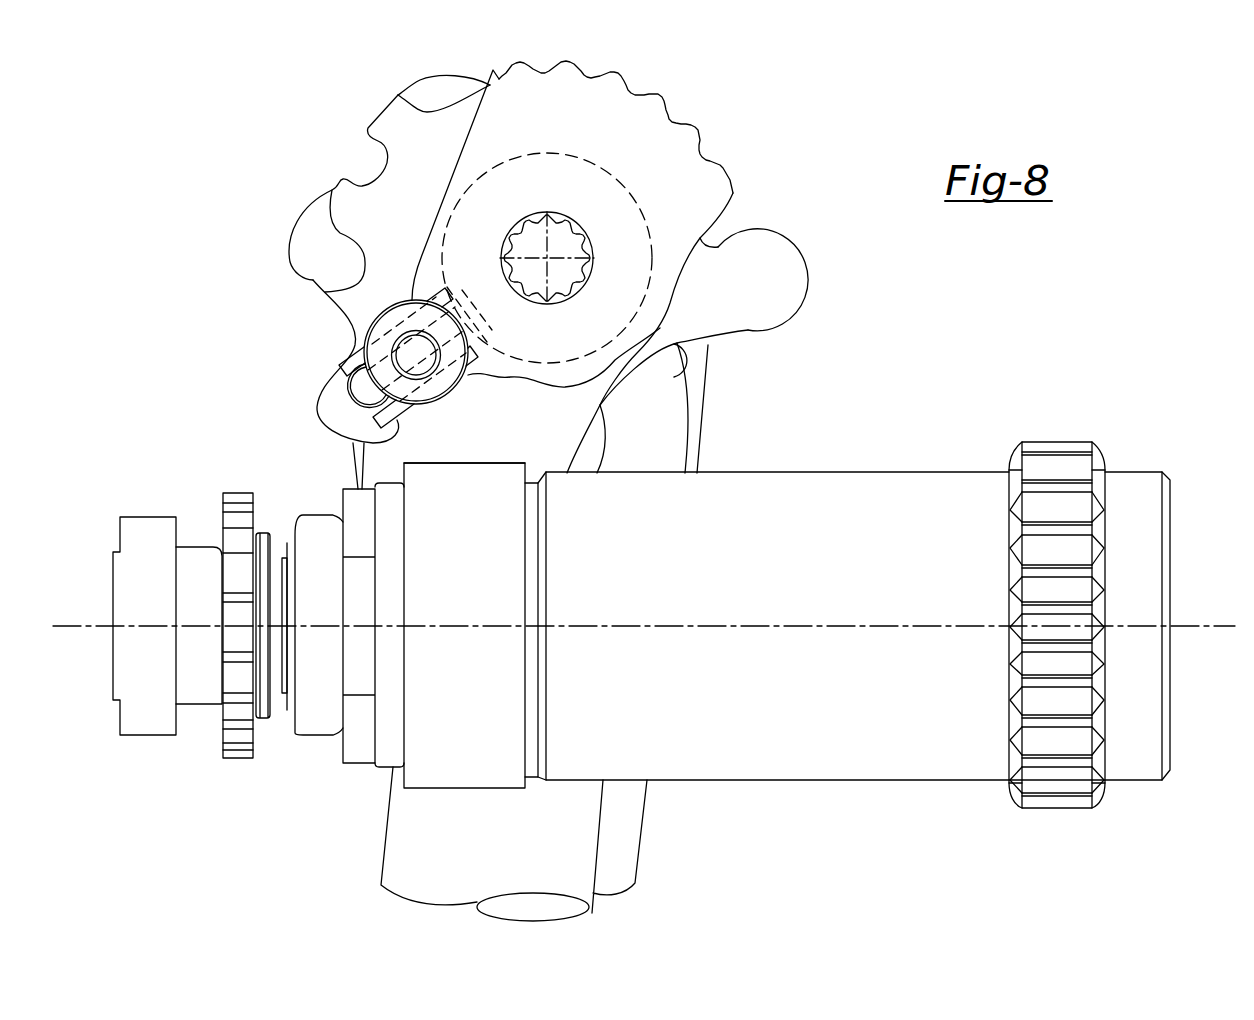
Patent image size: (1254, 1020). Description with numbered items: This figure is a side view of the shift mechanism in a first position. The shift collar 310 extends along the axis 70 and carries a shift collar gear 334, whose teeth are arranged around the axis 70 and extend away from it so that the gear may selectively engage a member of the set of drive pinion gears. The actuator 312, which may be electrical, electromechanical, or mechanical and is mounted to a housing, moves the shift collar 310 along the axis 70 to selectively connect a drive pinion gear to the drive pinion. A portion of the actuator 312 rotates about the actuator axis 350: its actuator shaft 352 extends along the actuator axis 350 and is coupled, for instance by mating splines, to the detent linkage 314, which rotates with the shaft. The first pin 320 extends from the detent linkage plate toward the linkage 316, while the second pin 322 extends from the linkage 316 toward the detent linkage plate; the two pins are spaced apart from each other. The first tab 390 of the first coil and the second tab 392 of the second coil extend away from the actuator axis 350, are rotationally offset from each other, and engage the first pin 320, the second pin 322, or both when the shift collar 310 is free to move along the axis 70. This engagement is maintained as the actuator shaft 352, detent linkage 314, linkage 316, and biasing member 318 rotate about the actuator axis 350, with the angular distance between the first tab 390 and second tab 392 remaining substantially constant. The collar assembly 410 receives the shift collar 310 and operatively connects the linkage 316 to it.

The axis 70 is at (1196, 626).
The shift collar 310 is at (820, 553).
The actuator 312 is at (497, 871).
The detent linkage 314 is at (505, 66).
The linkage 316 is at (590, 423).
The biasing member 318 is at (690, 369).
The first pin 320 is at (418, 356).
The second pin 322 is at (318, 397).
The shift collar gear 334 is at (1055, 810).
The actuator axis 350 is at (563, 214).
The actuator shaft 352 is at (533, 240).
The first tab 390 is at (346, 360).
The second tab 392 is at (373, 443).
The collar assembly 410 is at (467, 788).